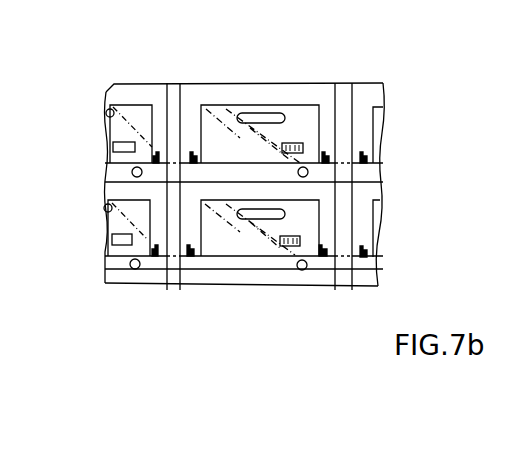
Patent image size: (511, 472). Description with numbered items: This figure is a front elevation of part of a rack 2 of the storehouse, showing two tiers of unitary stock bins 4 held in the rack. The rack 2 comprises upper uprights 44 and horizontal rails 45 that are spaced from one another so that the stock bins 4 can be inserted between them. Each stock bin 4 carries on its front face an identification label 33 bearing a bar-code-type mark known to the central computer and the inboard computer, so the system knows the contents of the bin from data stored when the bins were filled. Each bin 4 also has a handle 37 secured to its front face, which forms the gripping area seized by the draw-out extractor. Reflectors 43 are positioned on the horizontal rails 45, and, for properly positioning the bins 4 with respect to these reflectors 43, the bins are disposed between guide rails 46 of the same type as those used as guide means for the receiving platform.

The modular rack 2 is at (343, 100).
The unitary stock bin 4 is at (257, 107).
The identification label 33 is at (297, 142).
The handle 37 is at (240, 116).
The reflector 43 is at (131, 172).
The upper upright 44 is at (158, 283).
The horizontal rail 45 is at (176, 190).
The guide rail 46 is at (192, 150).